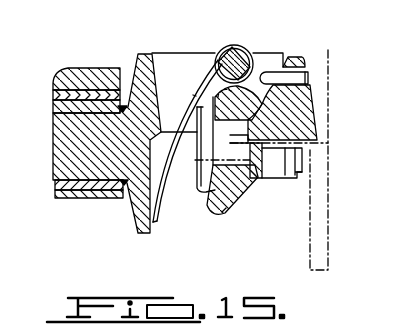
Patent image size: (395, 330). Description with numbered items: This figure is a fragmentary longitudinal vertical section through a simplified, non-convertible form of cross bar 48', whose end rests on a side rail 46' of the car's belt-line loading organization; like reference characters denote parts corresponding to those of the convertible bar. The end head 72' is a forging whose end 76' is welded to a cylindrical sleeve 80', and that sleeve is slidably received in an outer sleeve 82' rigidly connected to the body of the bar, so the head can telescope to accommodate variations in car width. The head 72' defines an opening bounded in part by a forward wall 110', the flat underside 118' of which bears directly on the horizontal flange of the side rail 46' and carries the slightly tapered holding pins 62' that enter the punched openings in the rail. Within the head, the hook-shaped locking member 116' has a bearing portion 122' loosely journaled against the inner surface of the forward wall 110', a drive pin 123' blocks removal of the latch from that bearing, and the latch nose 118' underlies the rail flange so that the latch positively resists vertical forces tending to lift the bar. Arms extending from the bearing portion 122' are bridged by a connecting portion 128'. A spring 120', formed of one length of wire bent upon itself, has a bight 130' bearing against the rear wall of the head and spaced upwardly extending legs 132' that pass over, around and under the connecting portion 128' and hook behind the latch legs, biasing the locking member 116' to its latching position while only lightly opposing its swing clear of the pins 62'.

The cross bar 48' is at (88, 70).
The end head 72' is at (217, 104).
The connecting portion 128' is at (247, 50).
The bearing portion 122' is at (284, 58).
The drive pin 123' is at (314, 51).
The forward wall 110' is at (302, 103).
The latch nose 118' is at (291, 164).
The spring legs 132' is at (178, 79).
The side rail 46' is at (281, 160).
The holding pin 62' is at (276, 183).
The locking member 116' is at (247, 232).
The spring 120' is at (187, 158).
The bight 130' is at (177, 245).
The head end 76' is at (91, 143).
The cylindrical sleeve 80' is at (76, 202).
The outer sleeve 82' is at (89, 211).